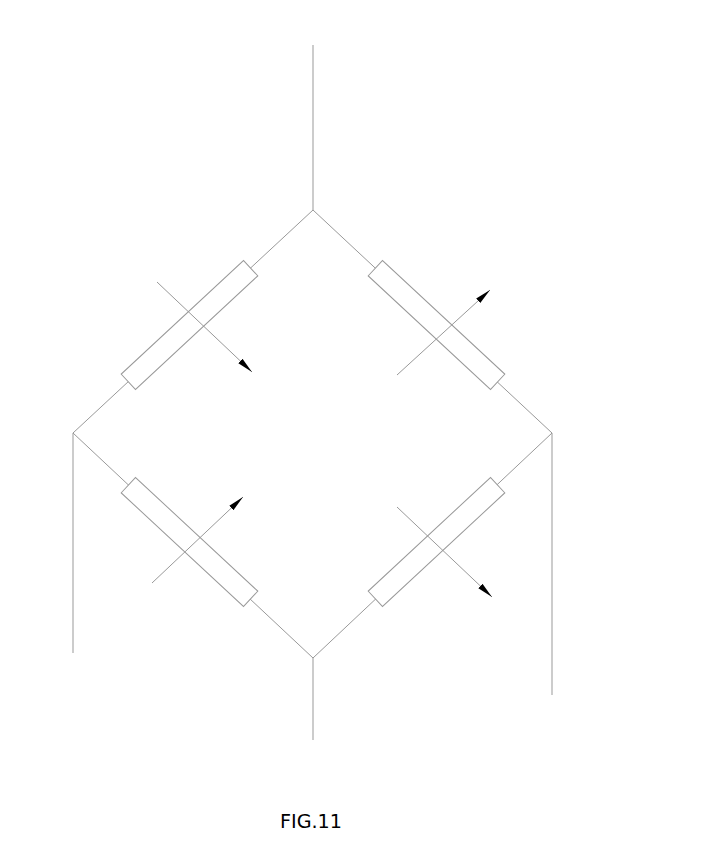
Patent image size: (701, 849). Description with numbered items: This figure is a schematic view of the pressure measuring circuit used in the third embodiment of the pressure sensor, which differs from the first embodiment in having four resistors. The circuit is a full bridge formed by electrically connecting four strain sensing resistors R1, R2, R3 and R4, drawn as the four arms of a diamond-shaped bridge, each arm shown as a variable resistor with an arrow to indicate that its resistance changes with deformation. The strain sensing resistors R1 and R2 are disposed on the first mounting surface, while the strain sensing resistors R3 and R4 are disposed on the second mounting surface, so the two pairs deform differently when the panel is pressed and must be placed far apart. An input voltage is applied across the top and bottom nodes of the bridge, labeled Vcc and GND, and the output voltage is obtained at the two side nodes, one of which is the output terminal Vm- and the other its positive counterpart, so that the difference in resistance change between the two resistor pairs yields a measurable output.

The strain sensing resistor R1 is at (185, 324).
The strain sensing resistor R2 is at (436, 549).
The strain sensing resistor R3 is at (454, 324).
The strain sensing resistor R4 is at (189, 549).
The supply voltage terminal Vcc is at (318, 107).
The ground terminal GND is at (303, 721).
The output terminal Vm- is at (554, 583).